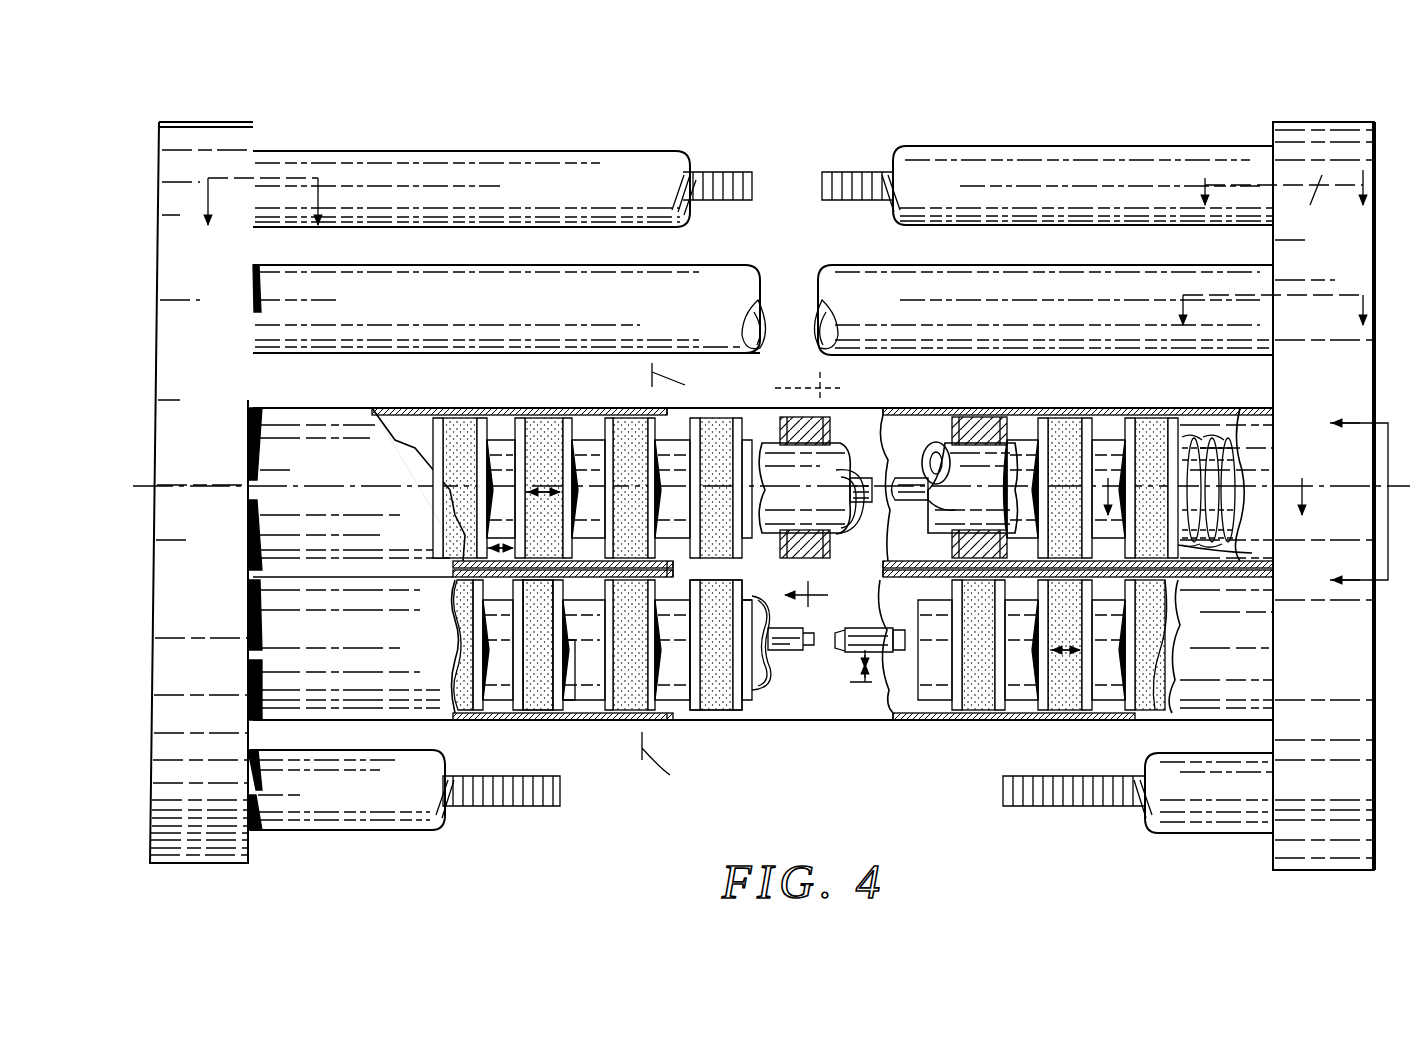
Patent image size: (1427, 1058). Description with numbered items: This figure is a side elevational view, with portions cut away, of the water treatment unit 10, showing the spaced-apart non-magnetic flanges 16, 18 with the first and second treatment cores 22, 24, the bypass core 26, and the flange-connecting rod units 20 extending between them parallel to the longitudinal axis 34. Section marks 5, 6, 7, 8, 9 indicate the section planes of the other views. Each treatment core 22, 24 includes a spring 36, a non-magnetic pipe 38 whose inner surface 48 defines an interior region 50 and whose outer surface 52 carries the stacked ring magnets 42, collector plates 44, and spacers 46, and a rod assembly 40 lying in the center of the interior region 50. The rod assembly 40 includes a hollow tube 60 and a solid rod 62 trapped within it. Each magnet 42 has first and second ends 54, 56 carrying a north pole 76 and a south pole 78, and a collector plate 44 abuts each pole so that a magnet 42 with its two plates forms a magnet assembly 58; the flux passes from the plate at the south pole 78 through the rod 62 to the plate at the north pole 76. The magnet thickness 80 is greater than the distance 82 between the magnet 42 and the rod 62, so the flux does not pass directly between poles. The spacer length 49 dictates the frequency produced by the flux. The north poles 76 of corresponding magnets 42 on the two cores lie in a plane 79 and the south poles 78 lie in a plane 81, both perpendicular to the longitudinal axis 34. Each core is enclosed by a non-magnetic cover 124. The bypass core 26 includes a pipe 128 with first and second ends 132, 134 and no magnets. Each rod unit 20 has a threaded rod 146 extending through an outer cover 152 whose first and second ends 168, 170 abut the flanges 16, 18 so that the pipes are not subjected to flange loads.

The treatment unit 10 is at (763, 160).
The pipe coupler or flange 16 is at (172, 190).
The pipe coupler or flange 18 is at (1350, 812).
The flange-connecting rod unit 20 is at (975, 145).
The first treatment core 22 is at (947, 406).
The second treatment core 24 is at (738, 712).
The bypass core 26 is at (408, 358).
The longitudinal axis 34 is at (213, 490).
The spring 36 is at (1196, 445).
The pipe 38 is at (784, 465).
The rod assembly 40 is at (868, 625).
The ring magnet 42 is at (1063, 425).
The collector plate 44 is at (490, 440).
The spacer 46 is at (583, 460).
The inner surface 48 is at (764, 665).
The length 49 is at (500, 545).
The interior region 50 is at (938, 468).
The outer surface 52 is at (948, 510).
The first end 54 is at (528, 440).
The second end 56 is at (440, 505).
The magnet assembly 58 is at (658, 408).
The hollow tube 60 is at (848, 644).
The solid rod 62 is at (862, 505).
The north pole 76 is at (452, 428).
The south pole 78 is at (640, 640).
The plane 79 is at (612, 722).
The thickness 80 is at (542, 490).
The plane 81 is at (680, 579).
The distance 82 is at (860, 664).
The cover 124 is at (272, 410).
The pipe 128 is at (722, 278).
The first end 132 is at (268, 282).
The second end 134 is at (1258, 280).
The rod 146 is at (520, 800).
The outer cover 152 is at (400, 818).
The first end 168 is at (268, 156).
The second end 170 is at (1210, 828).
The section line 5 is at (1202, 483).
The section line 6 is at (1258, 297).
The section line 7 is at (260, 195).
The section line 8 is at (1284, 180).
The section line 9 is at (814, 492).